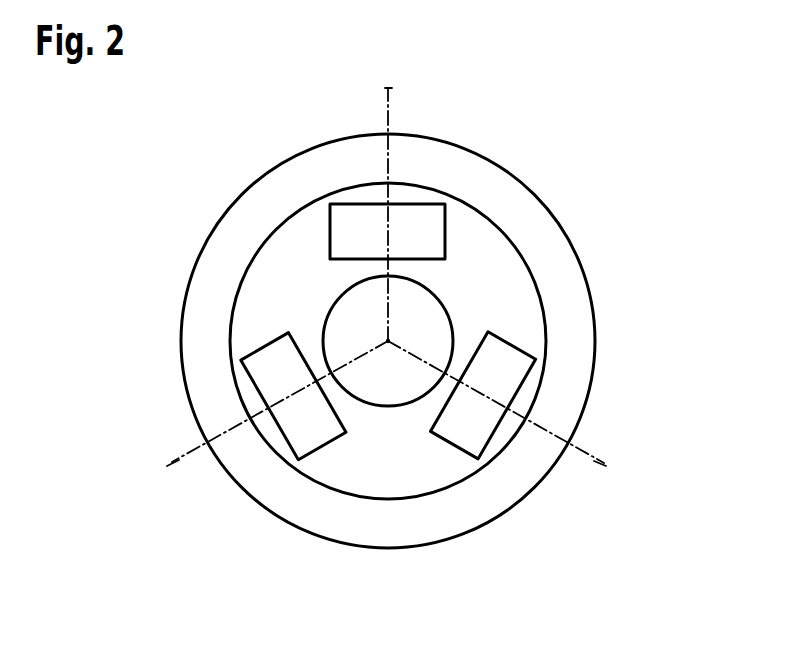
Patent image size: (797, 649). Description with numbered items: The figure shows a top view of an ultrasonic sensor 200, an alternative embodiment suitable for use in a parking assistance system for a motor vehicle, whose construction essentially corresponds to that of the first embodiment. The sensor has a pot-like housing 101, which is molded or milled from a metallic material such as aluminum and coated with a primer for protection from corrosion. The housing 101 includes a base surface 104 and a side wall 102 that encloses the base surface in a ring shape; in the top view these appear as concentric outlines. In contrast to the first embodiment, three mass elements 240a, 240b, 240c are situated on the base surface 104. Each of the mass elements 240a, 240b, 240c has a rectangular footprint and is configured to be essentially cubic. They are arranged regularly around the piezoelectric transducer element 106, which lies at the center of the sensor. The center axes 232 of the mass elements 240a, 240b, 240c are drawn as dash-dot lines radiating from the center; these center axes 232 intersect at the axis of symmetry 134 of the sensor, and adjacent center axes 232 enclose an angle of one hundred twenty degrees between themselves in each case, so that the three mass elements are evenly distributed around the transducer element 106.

The ultrasonic sensor 200 is at (604, 132).
The housing 101 is at (583, 272).
The side wall 102 is at (447, 513).
The base surface 104 is at (267, 297).
The piezoelectric transducer element 106 is at (377, 380).
The axis of symmetry 134 is at (388, 341).
The center axes 232 is at (390, 93).
The mass element 240a is at (305, 428).
The mass element 240b is at (507, 365).
The mass element 240c is at (352, 222).